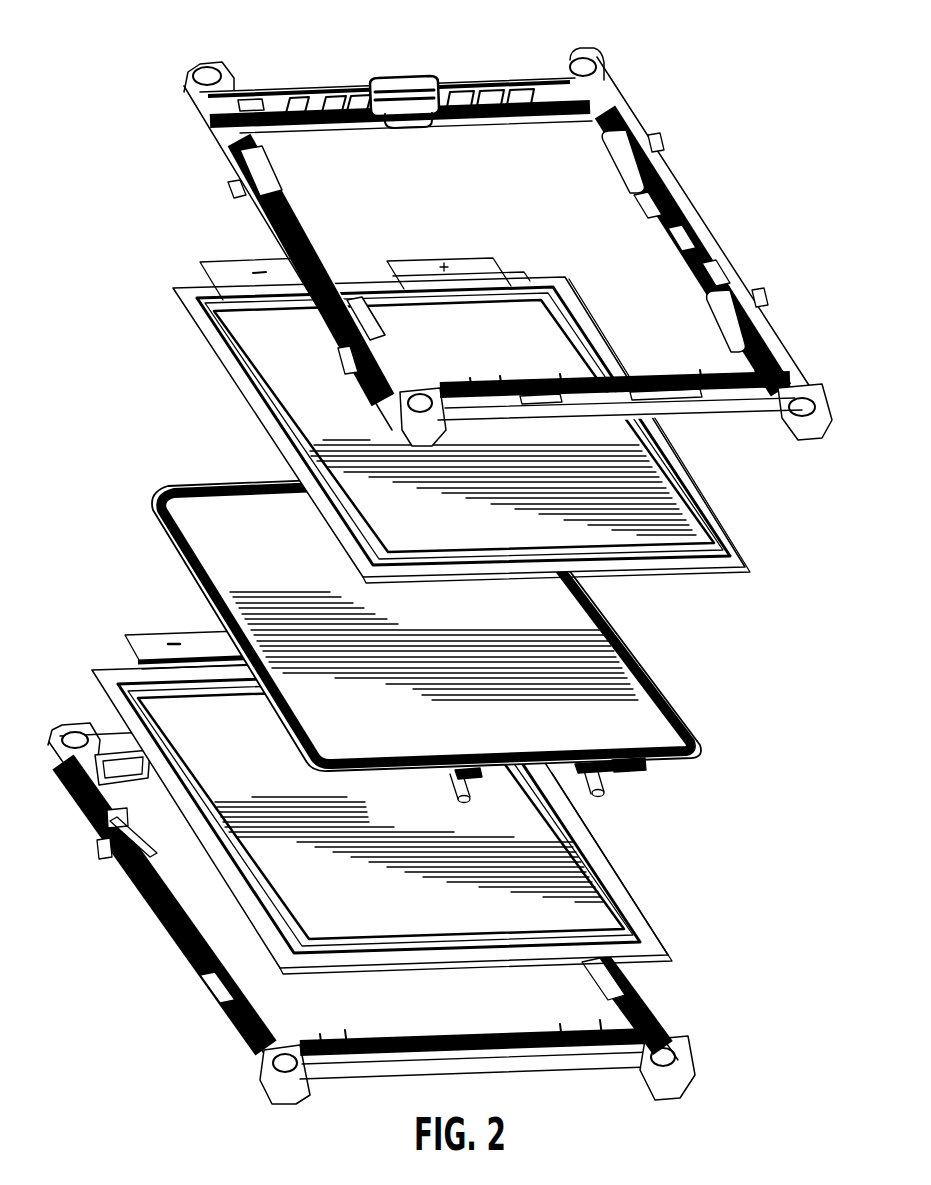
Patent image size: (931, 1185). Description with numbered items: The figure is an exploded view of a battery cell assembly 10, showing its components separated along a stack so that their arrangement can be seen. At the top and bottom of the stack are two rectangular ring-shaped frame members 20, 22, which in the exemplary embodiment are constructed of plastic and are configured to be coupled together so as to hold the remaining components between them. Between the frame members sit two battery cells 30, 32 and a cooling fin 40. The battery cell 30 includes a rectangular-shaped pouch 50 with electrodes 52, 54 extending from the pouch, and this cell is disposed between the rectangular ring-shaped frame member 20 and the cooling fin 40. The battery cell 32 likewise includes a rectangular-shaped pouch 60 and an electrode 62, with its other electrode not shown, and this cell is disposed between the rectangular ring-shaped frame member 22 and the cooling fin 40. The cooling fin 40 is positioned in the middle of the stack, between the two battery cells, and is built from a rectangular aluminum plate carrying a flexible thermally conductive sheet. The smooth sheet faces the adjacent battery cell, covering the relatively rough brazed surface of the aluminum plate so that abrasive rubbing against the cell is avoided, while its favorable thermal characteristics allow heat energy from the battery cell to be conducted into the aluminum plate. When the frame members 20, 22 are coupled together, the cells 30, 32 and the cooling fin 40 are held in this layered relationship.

The battery cell assembly 10 is at (701, 97).
The rectangular ring-shaped frame member 20 is at (793, 368).
The rectangular ring-shaped frame member 22 is at (663, 1018).
The battery cell 30 is at (686, 545).
The battery cell 32 is at (600, 924).
The cooling fin 40 is at (636, 695).
The rectangular-shaped pouch 50 is at (297, 398).
The electrode 52 is at (233, 276).
The electrode 54 is at (480, 262).
The rectangular-shaped pouch 60 is at (276, 862).
The electrode 62 is at (162, 640).